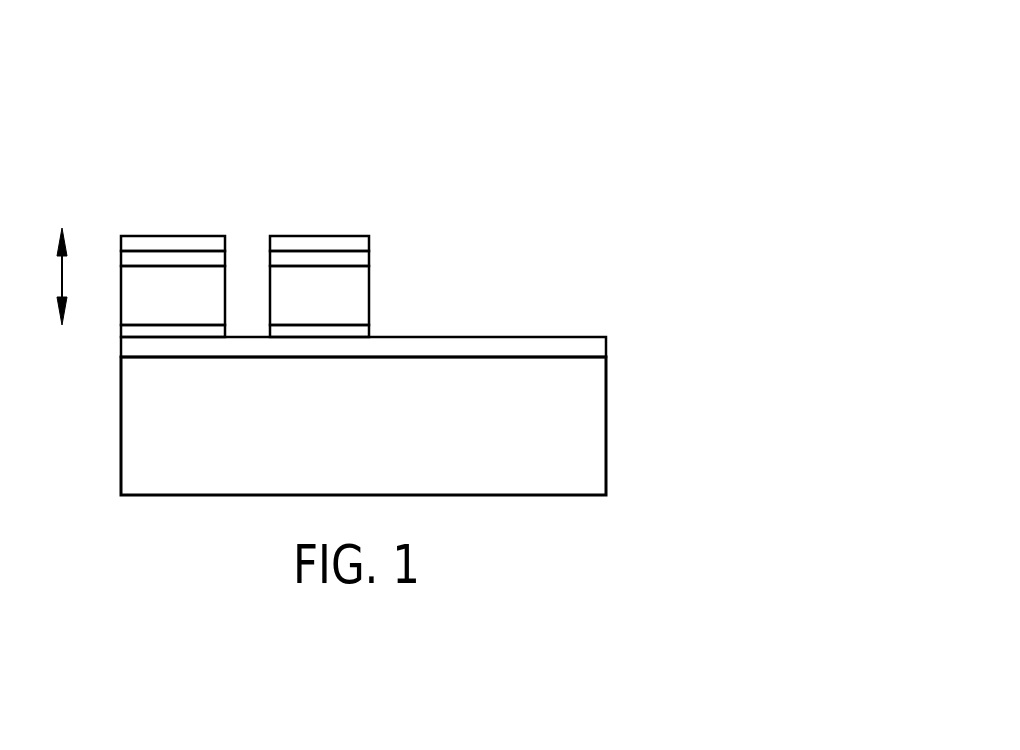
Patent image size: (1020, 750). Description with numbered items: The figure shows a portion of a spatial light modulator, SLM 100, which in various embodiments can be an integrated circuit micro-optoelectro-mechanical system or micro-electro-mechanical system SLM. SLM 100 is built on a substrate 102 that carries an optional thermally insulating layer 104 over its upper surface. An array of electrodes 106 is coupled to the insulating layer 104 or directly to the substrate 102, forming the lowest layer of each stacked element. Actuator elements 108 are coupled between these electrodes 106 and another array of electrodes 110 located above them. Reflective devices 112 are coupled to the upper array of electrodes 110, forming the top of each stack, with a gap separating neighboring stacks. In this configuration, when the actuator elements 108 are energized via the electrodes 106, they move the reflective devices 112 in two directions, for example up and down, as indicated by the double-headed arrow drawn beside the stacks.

The spatial light modulator 100 is at (640, 95).
The substrate 102 is at (593, 430).
The thermally insulating layer 104 is at (593, 348).
The electrodes 106 is at (358, 334).
The actuator elements 108 is at (358, 297).
The electrodes 110 is at (358, 258).
The reflective devices 112 is at (277, 242).